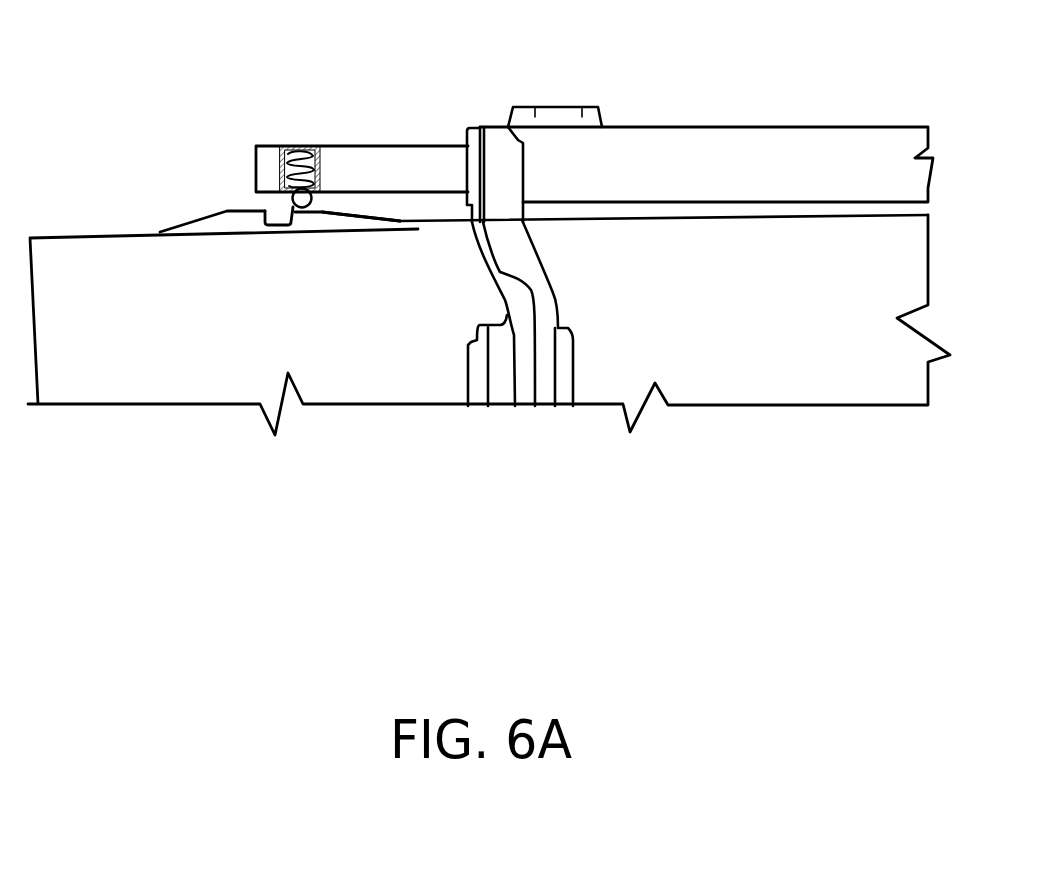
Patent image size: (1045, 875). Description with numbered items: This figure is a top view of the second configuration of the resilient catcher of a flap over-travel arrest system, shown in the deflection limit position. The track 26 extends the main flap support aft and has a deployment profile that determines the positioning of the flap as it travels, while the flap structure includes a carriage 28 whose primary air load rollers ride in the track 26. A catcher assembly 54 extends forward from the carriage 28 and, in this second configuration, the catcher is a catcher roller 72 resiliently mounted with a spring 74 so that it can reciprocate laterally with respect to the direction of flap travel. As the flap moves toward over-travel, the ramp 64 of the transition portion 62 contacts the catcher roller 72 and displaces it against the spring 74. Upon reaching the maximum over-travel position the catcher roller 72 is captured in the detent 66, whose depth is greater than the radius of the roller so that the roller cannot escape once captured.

The track 26 is at (433, 403).
The carriage 28 is at (630, 143).
The catcher assembly 54 is at (395, 133).
The transition portion 62 is at (322, 213).
The ramp 64 is at (353, 217).
The detent 66 is at (278, 218).
The catcher roller 72 is at (353, 147).
The spring 74 is at (285, 145).